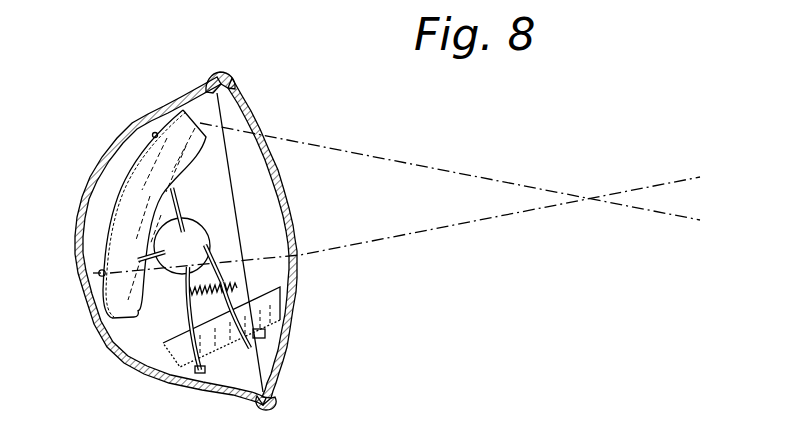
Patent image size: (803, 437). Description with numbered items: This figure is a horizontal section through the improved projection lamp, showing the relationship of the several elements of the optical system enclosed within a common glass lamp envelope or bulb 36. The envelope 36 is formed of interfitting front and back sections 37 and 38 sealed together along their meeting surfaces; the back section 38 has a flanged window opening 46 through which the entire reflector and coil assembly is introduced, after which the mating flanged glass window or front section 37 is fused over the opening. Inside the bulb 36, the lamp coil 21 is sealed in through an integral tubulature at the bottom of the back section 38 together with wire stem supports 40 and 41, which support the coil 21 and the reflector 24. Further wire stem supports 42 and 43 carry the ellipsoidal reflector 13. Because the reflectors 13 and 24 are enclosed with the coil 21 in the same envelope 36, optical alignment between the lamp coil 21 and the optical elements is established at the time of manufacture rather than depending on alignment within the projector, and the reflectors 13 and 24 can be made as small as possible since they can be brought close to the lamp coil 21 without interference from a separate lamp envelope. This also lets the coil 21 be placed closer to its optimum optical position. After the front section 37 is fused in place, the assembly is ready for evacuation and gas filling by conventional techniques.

The ellipsoidal reflector 13 is at (127, 190).
The lamp coil 21 is at (214, 266).
The reflector 24 is at (283, 303).
The lamp envelope 36 is at (245, 80).
The front section 37 is at (294, 209).
The back section 38 is at (134, 119).
The wire stem support 40 is at (177, 352).
The wire stem support 41 is at (265, 331).
The wire stem support 42 is at (97, 274).
The wire stem support 43 is at (180, 198).
The flanged window opening 46 is at (228, 163).